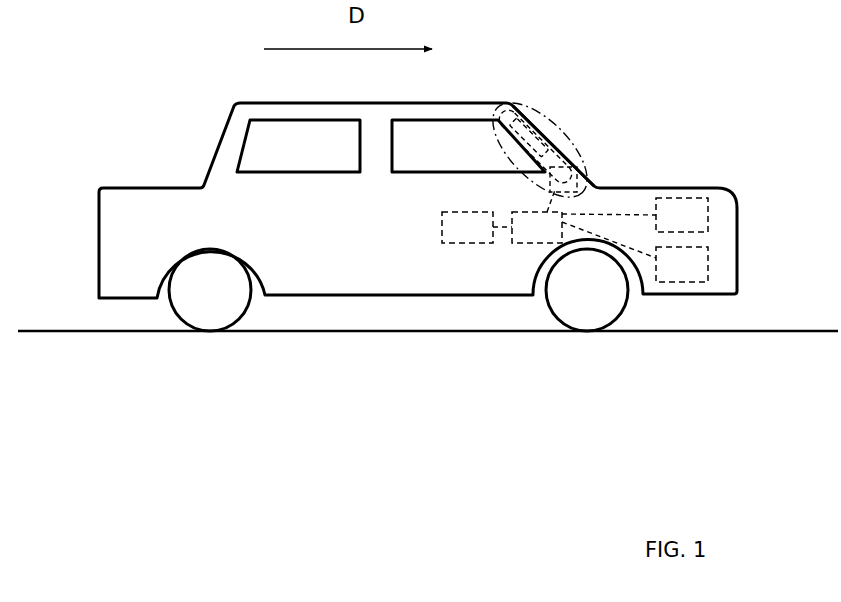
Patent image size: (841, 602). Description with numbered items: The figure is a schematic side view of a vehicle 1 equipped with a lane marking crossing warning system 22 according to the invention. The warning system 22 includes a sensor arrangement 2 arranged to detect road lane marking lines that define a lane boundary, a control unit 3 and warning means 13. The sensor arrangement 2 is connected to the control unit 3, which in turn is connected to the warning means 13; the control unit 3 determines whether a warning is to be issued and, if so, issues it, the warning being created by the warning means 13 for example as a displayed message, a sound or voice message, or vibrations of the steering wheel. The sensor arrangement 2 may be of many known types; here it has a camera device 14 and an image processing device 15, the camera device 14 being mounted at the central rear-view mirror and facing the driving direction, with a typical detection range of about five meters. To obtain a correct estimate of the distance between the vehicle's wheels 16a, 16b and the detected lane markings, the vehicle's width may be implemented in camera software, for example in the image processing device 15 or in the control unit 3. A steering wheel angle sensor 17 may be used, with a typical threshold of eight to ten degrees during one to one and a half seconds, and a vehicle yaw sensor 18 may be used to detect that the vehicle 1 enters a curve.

The vehicle 1 is at (182, 98).
The sensor arrangement 2 is at (555, 128).
The control unit 3 is at (527, 241).
The warning means 13 is at (483, 241).
The camera device 14 is at (537, 112).
The image processing device 15 is at (578, 160).
The wheel 16a is at (220, 298).
The wheel 16b is at (592, 298).
The steering wheel angle sensor 17 is at (668, 229).
The vehicle yaw sensor 18 is at (668, 277).
The lane marking crossing warning system 22 is at (697, 85).